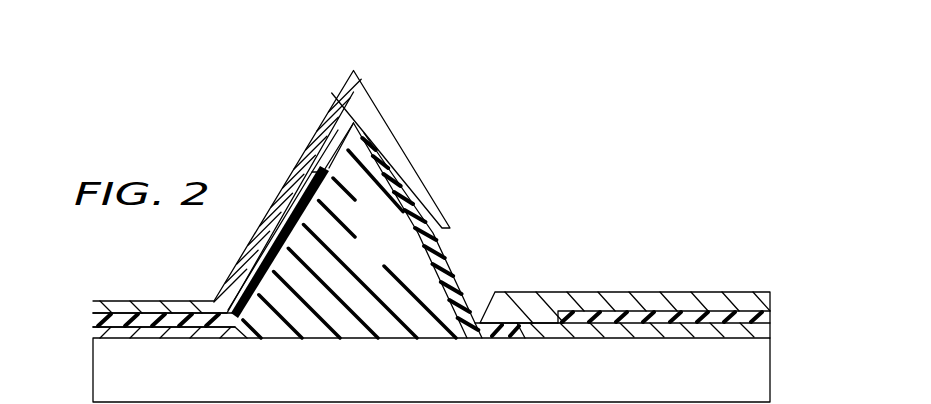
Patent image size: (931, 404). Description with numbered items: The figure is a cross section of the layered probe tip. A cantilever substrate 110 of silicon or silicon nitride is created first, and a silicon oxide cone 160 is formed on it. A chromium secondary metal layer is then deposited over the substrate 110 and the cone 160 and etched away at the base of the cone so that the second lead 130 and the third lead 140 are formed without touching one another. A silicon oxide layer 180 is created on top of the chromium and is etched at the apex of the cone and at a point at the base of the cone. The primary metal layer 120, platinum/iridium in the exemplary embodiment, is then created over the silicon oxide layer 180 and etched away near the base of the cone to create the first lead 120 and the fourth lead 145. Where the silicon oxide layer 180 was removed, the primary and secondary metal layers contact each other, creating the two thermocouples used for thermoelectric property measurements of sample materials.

The cantilever substrate 110 is at (453, 383).
The primary metal layer 120 is at (390, 88).
The second lead 130 is at (157, 334).
The third lead 140 is at (652, 332).
The fourth lead 145 is at (635, 292).
The silicon oxide cone 160 is at (375, 264).
The silicon oxide layer 180 is at (97, 320).